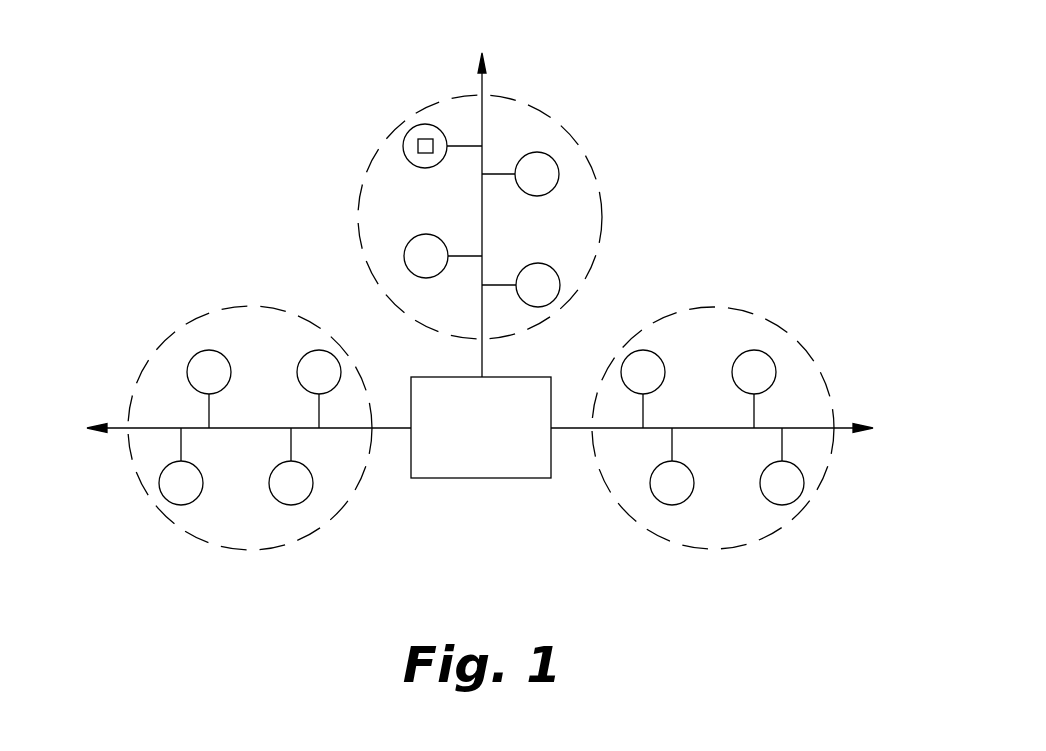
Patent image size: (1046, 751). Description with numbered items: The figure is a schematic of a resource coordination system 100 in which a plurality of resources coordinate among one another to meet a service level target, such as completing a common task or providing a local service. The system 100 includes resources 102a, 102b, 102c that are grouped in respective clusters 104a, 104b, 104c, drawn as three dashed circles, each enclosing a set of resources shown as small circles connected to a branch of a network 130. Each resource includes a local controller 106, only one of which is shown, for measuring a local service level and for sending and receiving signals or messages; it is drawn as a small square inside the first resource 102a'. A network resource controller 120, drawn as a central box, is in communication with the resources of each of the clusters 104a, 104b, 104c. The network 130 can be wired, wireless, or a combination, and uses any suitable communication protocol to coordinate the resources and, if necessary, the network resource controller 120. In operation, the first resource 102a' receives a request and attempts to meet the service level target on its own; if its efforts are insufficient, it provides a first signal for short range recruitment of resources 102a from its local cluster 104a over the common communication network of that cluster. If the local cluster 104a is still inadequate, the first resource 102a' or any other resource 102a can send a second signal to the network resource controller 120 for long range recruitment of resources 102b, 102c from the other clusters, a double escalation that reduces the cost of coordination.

The system 100 is at (762, 107).
The resource 102a is at (478, 217).
The first resource 102a' is at (393, 142).
The resource 102b is at (640, 373).
The resource 102c is at (208, 370).
The cluster 104a is at (563, 66).
The cluster 104b is at (832, 398).
The cluster 104c is at (140, 377).
The local controller 106 is at (427, 138).
The network resource controller 120 is at (466, 440).
The network 130 is at (463, 357).